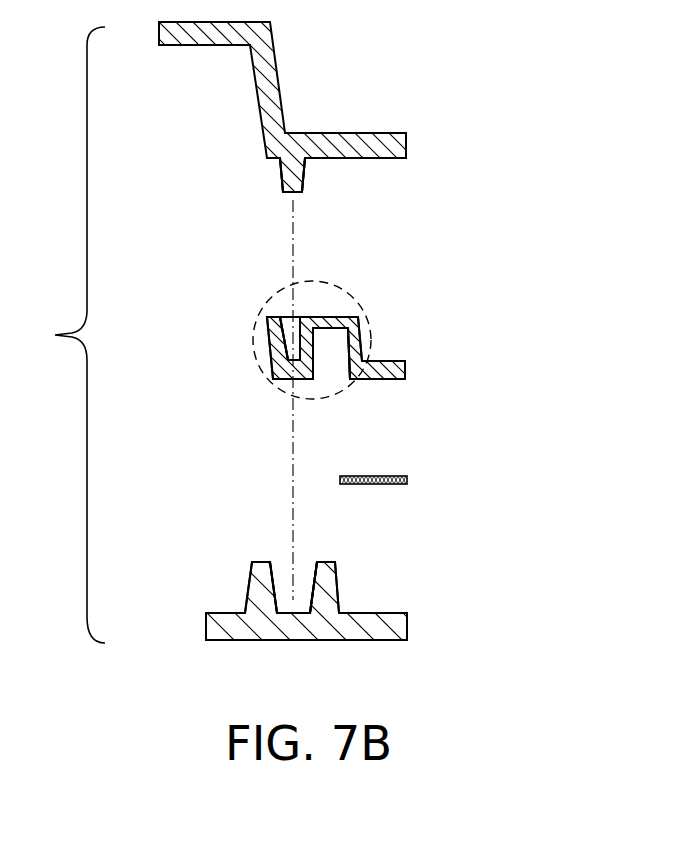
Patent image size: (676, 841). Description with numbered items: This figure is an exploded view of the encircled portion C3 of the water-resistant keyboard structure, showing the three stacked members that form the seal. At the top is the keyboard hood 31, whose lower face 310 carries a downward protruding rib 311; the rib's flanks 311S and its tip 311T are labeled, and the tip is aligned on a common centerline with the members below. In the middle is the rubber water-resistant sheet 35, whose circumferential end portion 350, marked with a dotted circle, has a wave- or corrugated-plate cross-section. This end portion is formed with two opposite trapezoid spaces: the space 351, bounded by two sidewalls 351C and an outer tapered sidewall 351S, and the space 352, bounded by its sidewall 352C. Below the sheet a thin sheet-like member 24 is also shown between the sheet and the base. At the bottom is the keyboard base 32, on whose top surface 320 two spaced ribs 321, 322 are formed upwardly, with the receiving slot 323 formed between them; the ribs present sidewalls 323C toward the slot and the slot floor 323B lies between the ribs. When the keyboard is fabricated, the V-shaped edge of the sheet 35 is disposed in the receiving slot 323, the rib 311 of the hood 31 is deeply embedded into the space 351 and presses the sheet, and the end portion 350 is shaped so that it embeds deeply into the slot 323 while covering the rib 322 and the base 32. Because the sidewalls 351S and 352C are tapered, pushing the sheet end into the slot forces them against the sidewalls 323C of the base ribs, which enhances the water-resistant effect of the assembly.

The encircled portion C3 is at (59, 335).
The keyboard hood 31 is at (418, 152).
The bottom surface of first terminal 310 is at (355, 159).
The protruding rib 311 is at (292, 182).
The side surfaces of protrusion 311S is at (280, 172).
The tip of protrusion 311T is at (297, 194).
The water-resistant sheet 35 is at (420, 375).
The end portion 350 is at (367, 312).
The trapezoid slot 351 is at (276, 349).
The sidewall 351S is at (281, 347).
The sidewalls 351C is at (300, 357).
The trapezoid slot 352 is at (357, 345).
The sidewall 352C is at (318, 365).
The insulating sheet 24 is at (420, 485).
The keyboard base 32 is at (420, 635).
The surface 320 is at (385, 612).
The rib 321 is at (265, 602).
The rib 322 is at (328, 602).
The receiving slot 323 is at (286, 598).
The sidewalls 323C is at (312, 602).
The groove bottom 323B is at (282, 605).